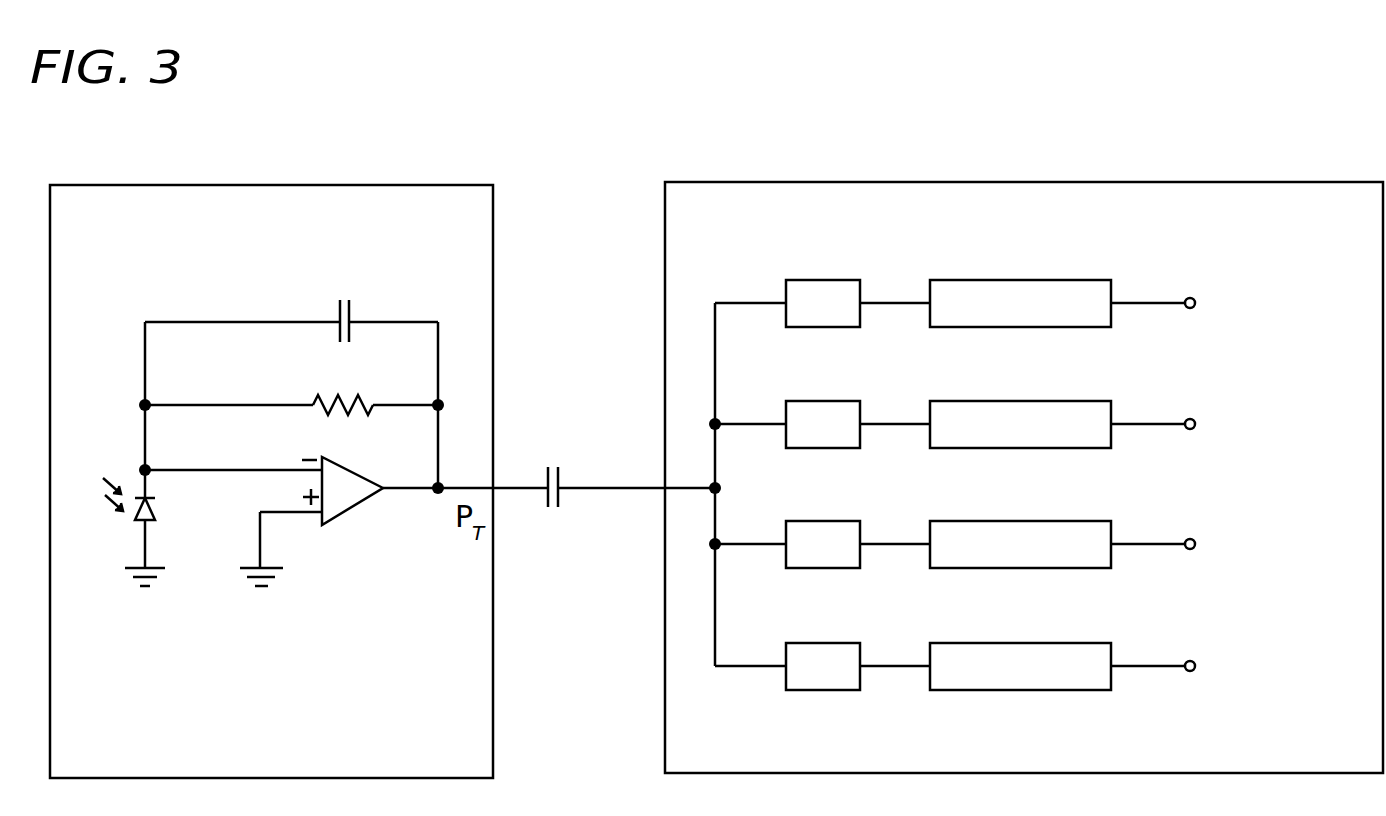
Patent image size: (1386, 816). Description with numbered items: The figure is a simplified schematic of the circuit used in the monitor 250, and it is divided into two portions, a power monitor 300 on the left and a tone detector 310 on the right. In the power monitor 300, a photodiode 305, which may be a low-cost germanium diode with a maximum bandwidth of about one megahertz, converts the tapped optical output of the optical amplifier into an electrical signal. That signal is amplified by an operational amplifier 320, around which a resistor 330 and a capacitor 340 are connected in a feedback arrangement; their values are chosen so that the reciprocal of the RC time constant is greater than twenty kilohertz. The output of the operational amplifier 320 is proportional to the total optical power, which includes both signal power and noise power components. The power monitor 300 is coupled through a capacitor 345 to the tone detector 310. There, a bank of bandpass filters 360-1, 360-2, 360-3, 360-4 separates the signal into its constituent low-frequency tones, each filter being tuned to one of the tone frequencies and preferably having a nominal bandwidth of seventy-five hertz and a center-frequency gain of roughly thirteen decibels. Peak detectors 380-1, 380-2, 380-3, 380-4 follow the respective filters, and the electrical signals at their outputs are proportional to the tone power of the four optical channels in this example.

The monitor 250 is at (390, 155).
The power monitor 300 is at (393, 690).
The photodiode 305 is at (153, 517).
The tone detector 310 is at (1070, 760).
The operational amplifier 320 is at (353, 507).
The resistor 330 is at (317, 403).
The capacitor 340 is at (349, 310).
The capacitor 345 is at (558, 477).
The bandpass filter 360-1 is at (820, 280).
The bandpass filter 360-2 is at (820, 401).
The bandpass filter 360-3 is at (820, 521).
The bandpass filter 360-4 is at (820, 643).
The peak detector 380-1 is at (1027, 280).
The peak detector 380-2 is at (1027, 401).
The peak detector 380-3 is at (1027, 521).
The peak detector 380-4 is at (1027, 643).